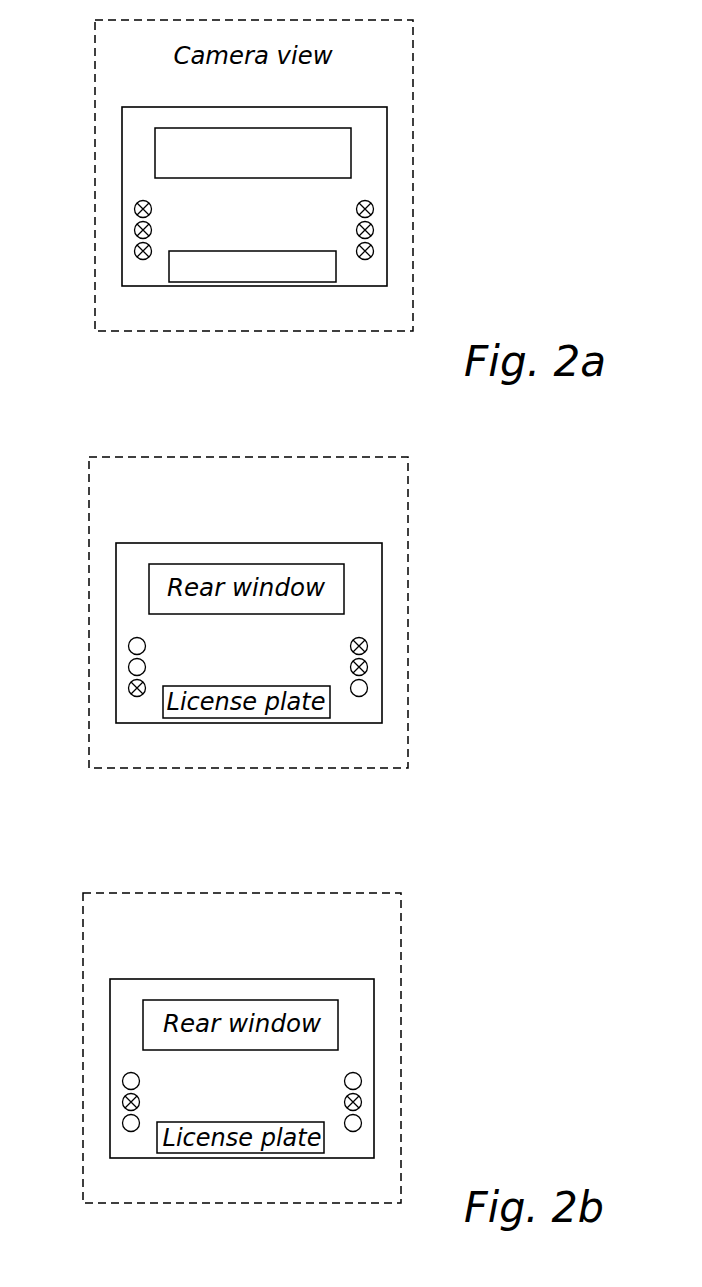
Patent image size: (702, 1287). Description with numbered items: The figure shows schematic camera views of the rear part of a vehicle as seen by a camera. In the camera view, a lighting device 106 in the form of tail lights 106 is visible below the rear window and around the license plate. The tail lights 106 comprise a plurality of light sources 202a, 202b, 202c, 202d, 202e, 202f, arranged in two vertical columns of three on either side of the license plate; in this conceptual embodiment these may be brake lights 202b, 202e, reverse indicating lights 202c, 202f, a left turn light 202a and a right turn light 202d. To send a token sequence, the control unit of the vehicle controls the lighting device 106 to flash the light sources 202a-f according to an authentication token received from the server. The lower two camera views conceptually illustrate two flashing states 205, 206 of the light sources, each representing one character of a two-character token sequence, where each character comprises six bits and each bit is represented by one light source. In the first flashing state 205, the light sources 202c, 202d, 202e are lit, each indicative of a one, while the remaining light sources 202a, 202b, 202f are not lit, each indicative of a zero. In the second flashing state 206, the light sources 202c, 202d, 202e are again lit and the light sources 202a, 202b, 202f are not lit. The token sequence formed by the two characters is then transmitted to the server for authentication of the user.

In FIG. 2a, the lighting device 106 is at (358, 278).
In FIG. 2a, the left turn light 202a is at (134, 209).
In FIG. 2b, the left turn light 202a is at (128, 646).
In FIG. 2a, the brake light 202b is at (134, 230).
In FIG. 2b, the brake light 202b is at (128, 667).
In FIG. 2a, the reverse indicating light 202c is at (134, 251).
In FIG. 2b, the reverse indicating light 202c is at (128, 688).
In FIG. 2a, the right turn light 202d is at (374, 209).
In FIG. 2b, the right turn light 202d is at (368, 646).
In FIG. 2a, the brake light 202e is at (374, 230).
In FIG. 2b, the brake light 202e is at (368, 667).
In FIG. 2a, the reverse indicating light 202f is at (374, 251).
In FIG. 2b, the reverse indicating light 202f is at (368, 688).
In FIG. 2b, the first flashing state 205 is at (259, 753).
In FIG. 2b, the second flashing state 206 is at (253, 1190).